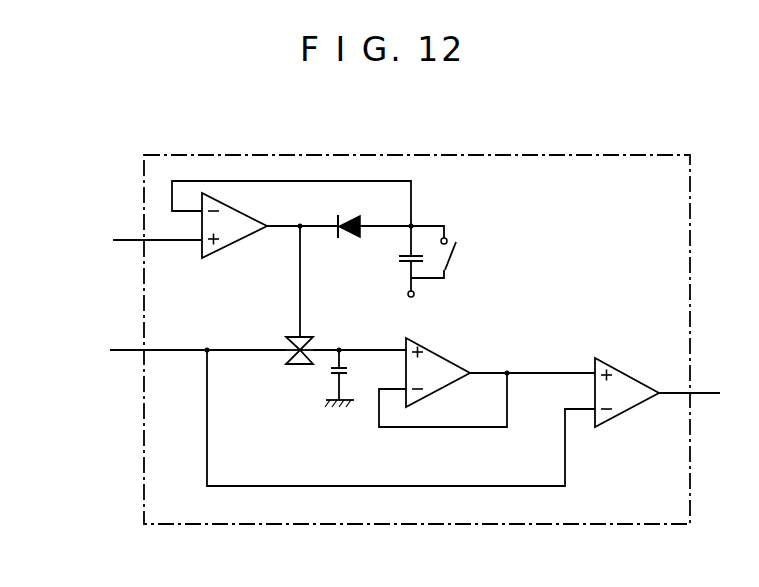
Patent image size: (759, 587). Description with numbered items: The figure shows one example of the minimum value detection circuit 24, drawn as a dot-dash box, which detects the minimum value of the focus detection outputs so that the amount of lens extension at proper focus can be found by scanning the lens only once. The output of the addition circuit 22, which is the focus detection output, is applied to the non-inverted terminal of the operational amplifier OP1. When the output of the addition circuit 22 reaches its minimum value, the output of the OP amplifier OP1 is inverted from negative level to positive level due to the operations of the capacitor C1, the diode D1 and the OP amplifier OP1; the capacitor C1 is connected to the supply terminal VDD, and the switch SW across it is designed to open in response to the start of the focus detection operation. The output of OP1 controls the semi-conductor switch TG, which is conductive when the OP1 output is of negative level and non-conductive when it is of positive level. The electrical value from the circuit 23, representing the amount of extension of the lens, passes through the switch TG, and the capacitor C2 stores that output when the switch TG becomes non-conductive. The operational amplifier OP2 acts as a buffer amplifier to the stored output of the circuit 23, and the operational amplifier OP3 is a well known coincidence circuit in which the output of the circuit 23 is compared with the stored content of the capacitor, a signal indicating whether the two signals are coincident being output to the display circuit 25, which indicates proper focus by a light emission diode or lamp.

The addition circuit 22 is at (143, 242).
The circuit for converting lens extension into an electrical value 23 is at (184, 352).
The minimum value detection circuit 24 is at (483, 155).
The display circuit 25 is at (706, 396).
The operational amplifier OP1 is at (232, 258).
The operational amplifier OP2 is at (443, 362).
The operational amplifier OP3 is at (632, 378).
The diode D1 is at (349, 220).
The capacitor C1 is at (397, 261).
The capacitor C2 is at (351, 378).
The switch SW is at (449, 252).
The semi-conductor switch TG is at (340, 310).
The supply voltage terminal VDD is at (418, 311).